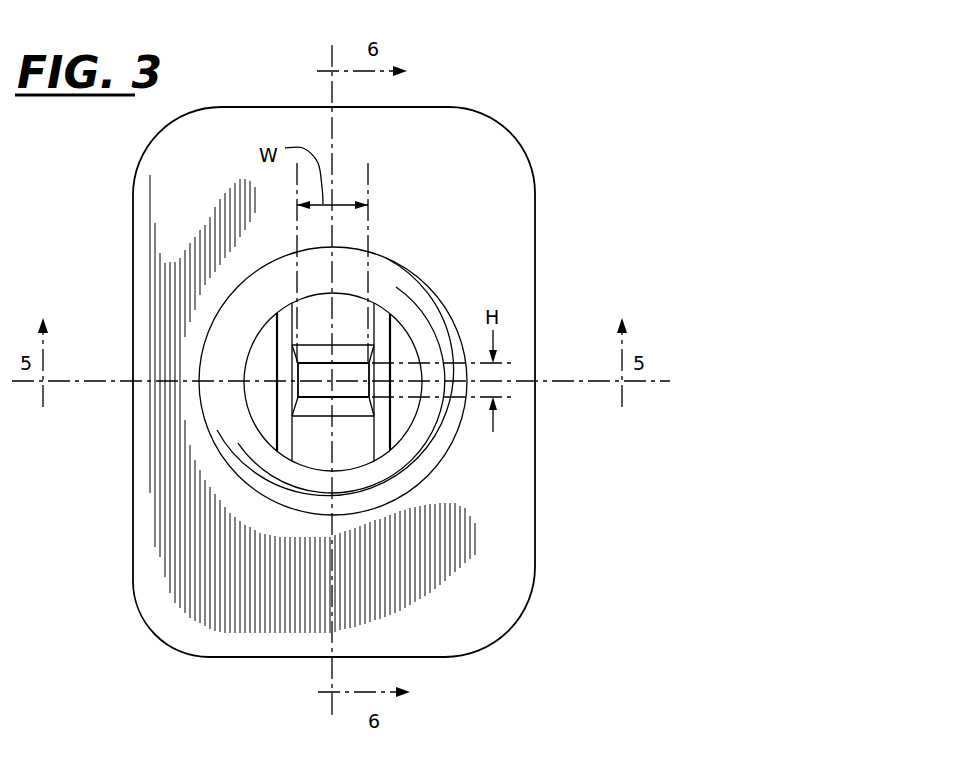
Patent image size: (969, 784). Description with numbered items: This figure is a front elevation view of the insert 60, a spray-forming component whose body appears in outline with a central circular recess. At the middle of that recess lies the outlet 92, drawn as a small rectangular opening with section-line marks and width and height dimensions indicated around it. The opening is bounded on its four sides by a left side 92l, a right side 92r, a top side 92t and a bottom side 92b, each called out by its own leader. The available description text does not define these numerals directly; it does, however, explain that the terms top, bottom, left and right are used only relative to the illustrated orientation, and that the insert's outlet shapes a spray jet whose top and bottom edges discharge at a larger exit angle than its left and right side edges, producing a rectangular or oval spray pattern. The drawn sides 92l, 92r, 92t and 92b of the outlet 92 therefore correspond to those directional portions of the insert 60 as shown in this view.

The nut body 60 is at (494, 144).
The slot 92 is at (297, 377).
The slot left side 92l is at (314, 395).
The slot right side 92r is at (369, 393).
The slot top side 92t is at (352, 363).
The slot bottom side 92b is at (352, 397).